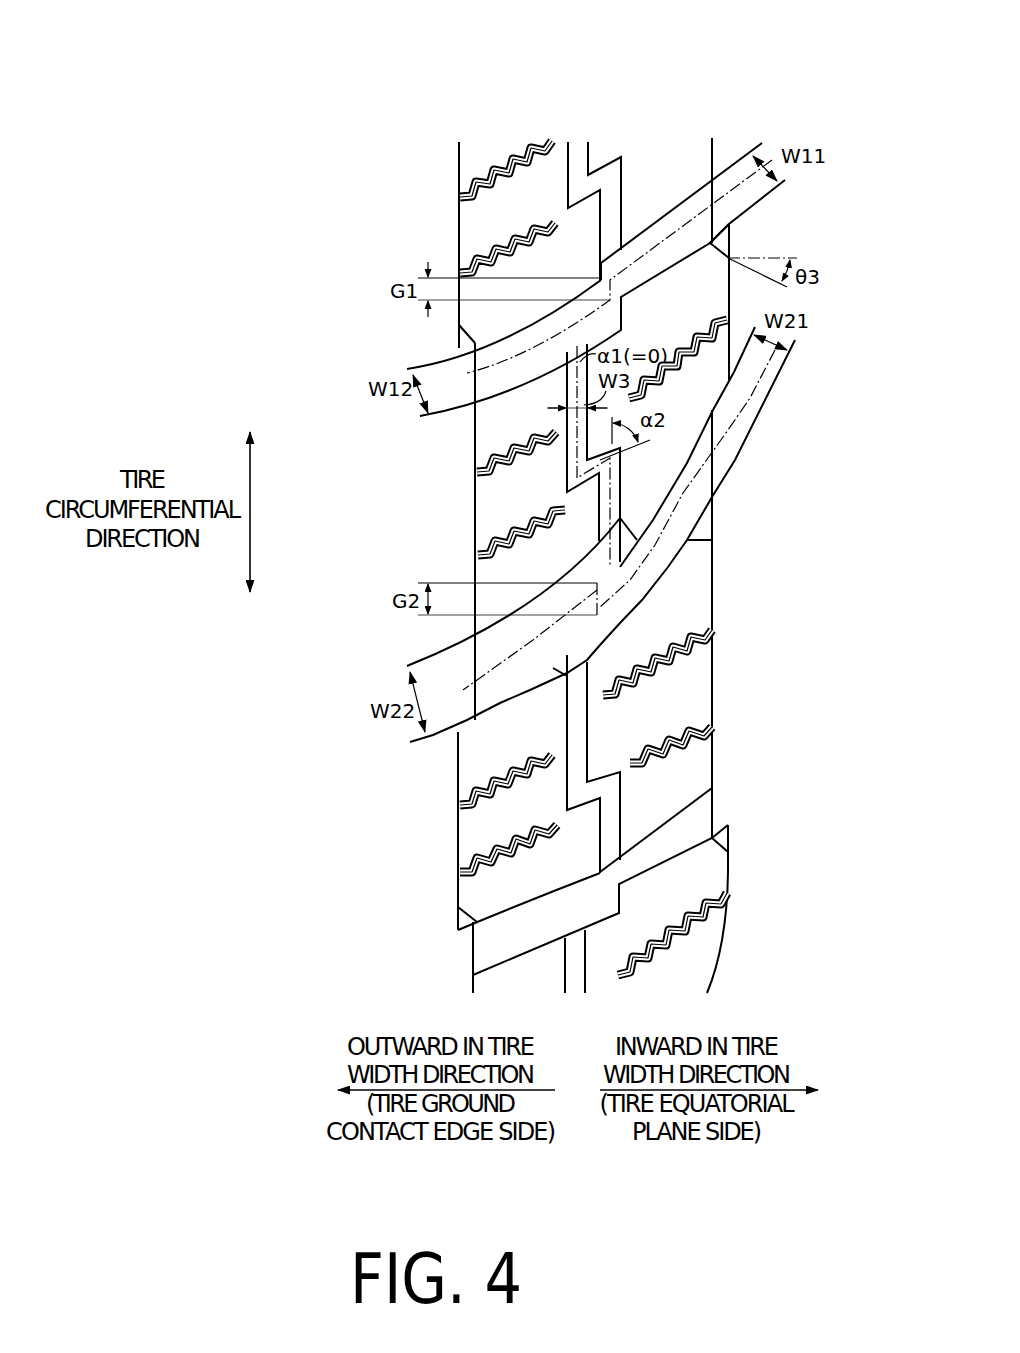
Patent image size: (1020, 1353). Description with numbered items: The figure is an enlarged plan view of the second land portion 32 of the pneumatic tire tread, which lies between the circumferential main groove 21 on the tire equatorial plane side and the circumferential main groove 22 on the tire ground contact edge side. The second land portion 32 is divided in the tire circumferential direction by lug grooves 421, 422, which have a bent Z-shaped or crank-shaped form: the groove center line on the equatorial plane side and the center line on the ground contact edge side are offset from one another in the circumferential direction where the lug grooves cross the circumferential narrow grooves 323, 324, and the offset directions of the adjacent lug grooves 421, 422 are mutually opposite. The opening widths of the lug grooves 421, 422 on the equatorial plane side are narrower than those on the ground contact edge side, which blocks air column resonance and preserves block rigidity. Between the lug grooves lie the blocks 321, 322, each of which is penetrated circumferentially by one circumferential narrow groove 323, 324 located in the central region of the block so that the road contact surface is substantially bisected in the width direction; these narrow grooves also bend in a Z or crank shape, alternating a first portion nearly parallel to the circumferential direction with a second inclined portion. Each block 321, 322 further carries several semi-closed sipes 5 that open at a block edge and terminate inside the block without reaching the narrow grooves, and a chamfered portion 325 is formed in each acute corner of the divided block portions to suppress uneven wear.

The second land portion 32 is at (635, 46).
The circumferential main groove 21 is at (740, 143).
The circumferential main groove 22 is at (440, 158).
The sipe 5 is at (462, 186).
The block 321 is at (458, 236).
The block 322 is at (472, 505).
The circumferential narrow groove 323 is at (580, 138).
The circumferential narrow groove 324 is at (475, 468).
The chamfered portion 325 is at (725, 245).
The lug groove 421 is at (678, 215).
The lug groove 422 is at (627, 543).